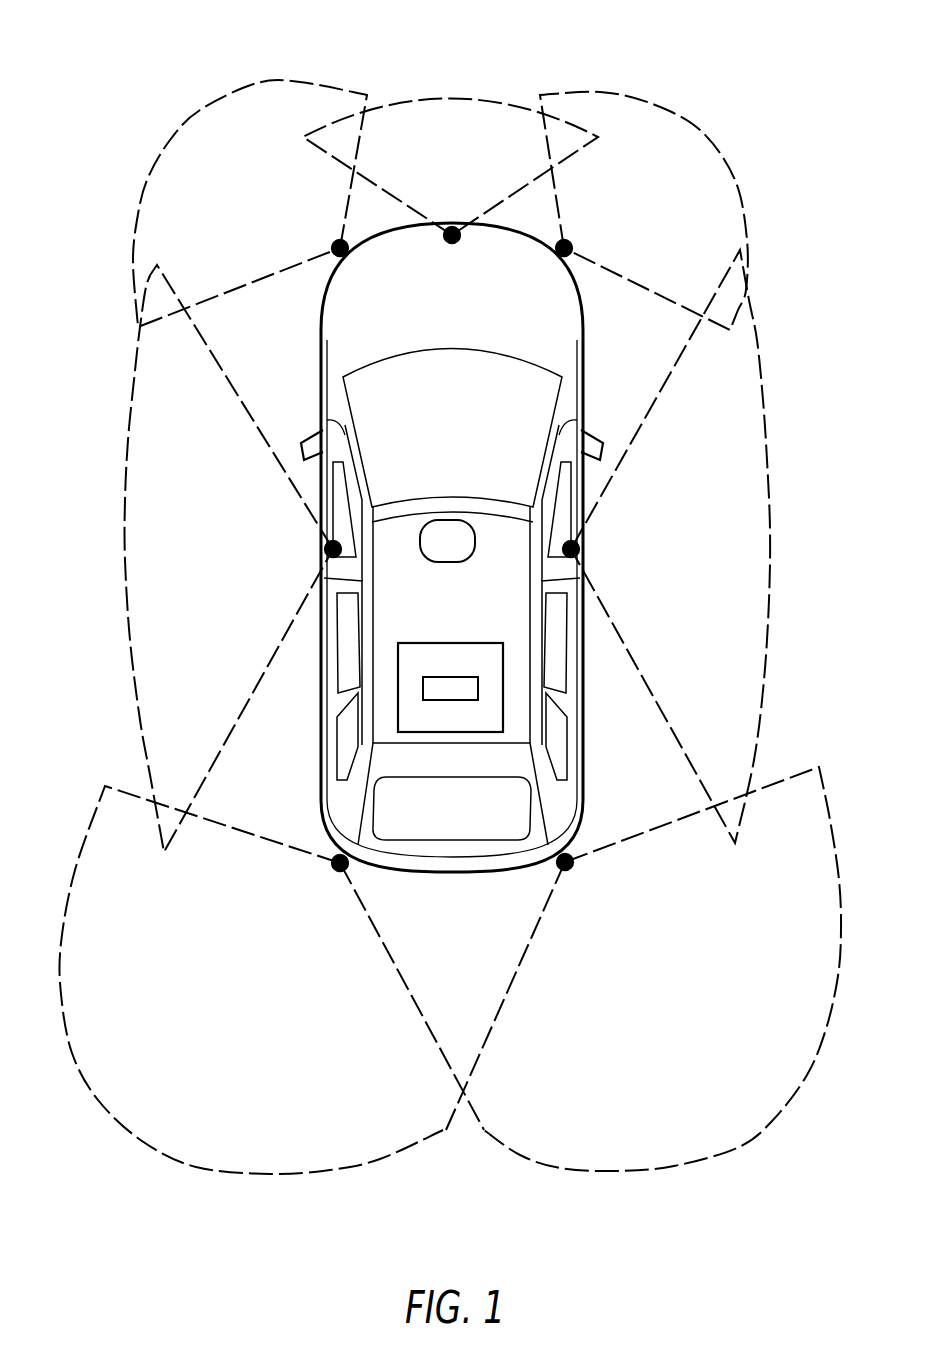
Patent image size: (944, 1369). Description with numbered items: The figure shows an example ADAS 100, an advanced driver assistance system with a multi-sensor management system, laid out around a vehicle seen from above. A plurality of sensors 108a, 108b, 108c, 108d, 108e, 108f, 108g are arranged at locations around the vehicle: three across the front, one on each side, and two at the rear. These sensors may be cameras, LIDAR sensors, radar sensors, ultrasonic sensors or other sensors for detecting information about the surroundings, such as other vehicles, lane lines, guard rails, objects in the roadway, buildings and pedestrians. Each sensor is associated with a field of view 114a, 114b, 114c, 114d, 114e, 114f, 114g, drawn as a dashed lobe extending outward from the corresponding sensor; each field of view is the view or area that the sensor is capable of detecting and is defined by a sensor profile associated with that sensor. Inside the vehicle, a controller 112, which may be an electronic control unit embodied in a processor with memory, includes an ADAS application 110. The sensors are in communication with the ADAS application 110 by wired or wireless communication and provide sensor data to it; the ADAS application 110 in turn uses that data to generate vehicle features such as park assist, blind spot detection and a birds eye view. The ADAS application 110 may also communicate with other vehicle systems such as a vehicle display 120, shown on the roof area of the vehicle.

The ADAS 100 is at (163, 53).
The sensor 108a is at (452, 240).
The sensor 108b is at (565, 247).
The sensor 108c is at (573, 549).
The sensor 108d is at (565, 870).
The sensor 108e is at (340, 870).
The sensor 108f is at (330, 549).
The sensor 108g is at (339, 246).
The ADAS application 110 is at (483, 645).
The controller 112 is at (440, 688).
The field of view 114a is at (455, 135).
The field of view 114b is at (703, 170).
The field of view 114c is at (740, 470).
The field of view 114d is at (693, 1120).
The field of view 114e is at (210, 1120).
The field of view 114f is at (150, 465).
The field of view 114g is at (187, 173).
The vehicle display 120 is at (453, 535).